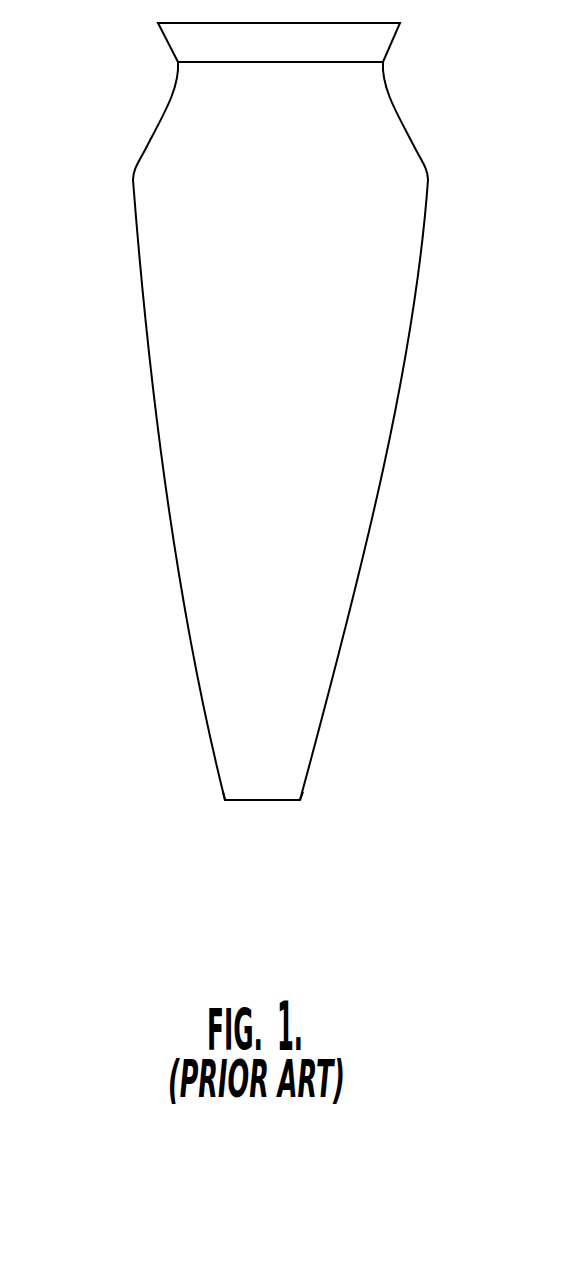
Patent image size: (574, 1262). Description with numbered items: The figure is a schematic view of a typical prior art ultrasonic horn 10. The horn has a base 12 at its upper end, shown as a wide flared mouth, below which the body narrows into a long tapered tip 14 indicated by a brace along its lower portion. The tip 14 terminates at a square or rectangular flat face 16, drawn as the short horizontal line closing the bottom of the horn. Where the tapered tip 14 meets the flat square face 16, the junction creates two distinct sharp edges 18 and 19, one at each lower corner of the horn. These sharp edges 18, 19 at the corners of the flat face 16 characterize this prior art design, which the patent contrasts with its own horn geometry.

The ultrasonic horn 10 is at (512, 80).
The base 12 is at (182, 38).
The tip 14 is at (167, 597).
The flat face 16 is at (263, 800).
The sharp edge 18 is at (222, 800).
The sharp edge 19 is at (307, 784).